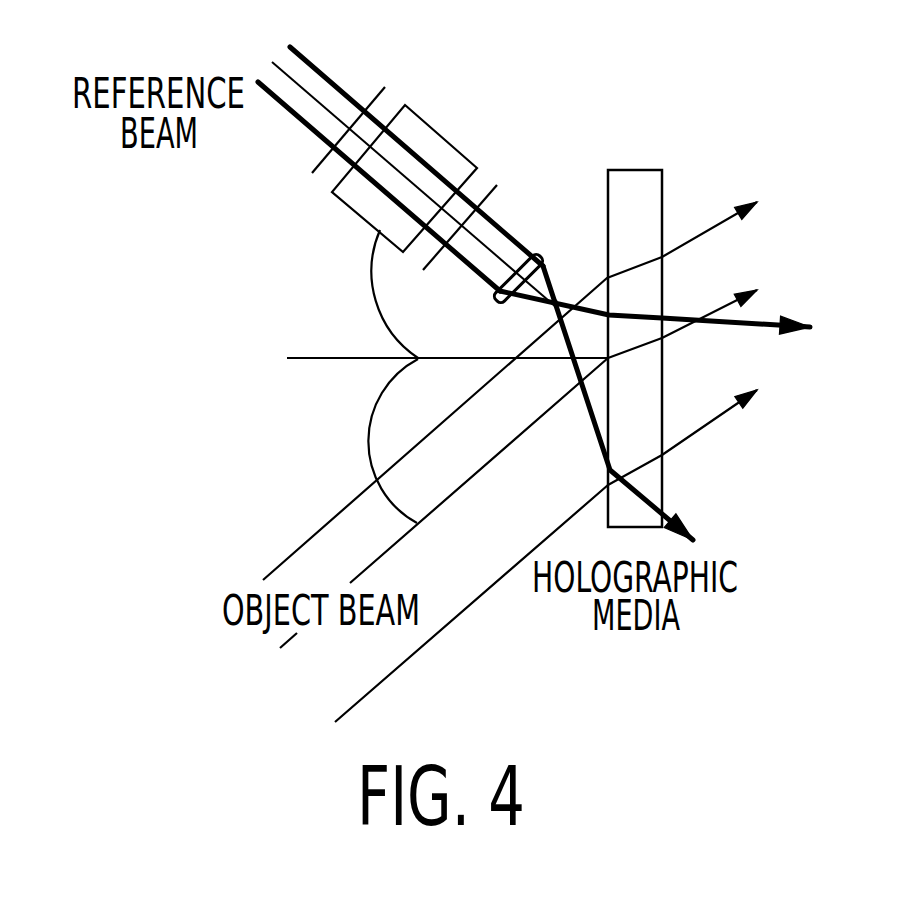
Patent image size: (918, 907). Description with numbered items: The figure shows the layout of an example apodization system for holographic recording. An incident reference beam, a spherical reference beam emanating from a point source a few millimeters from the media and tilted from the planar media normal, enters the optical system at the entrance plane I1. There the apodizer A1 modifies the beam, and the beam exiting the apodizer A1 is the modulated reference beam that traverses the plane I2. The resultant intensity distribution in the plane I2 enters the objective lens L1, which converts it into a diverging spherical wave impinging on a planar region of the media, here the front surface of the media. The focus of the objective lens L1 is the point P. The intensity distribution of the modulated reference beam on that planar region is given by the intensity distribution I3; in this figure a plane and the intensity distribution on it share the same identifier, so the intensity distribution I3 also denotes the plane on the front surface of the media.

The reference beam intensity profile before aperture I1 is at (359, 108).
The aperture A1 is at (404, 167).
The reference beam intensity profile after aperture I2 is at (473, 205).
The lens L1 is at (519, 245).
The focal point of reference beam P is at (560, 293).
The reference beam intensity profile at holographic media I3 is at (622, 378).